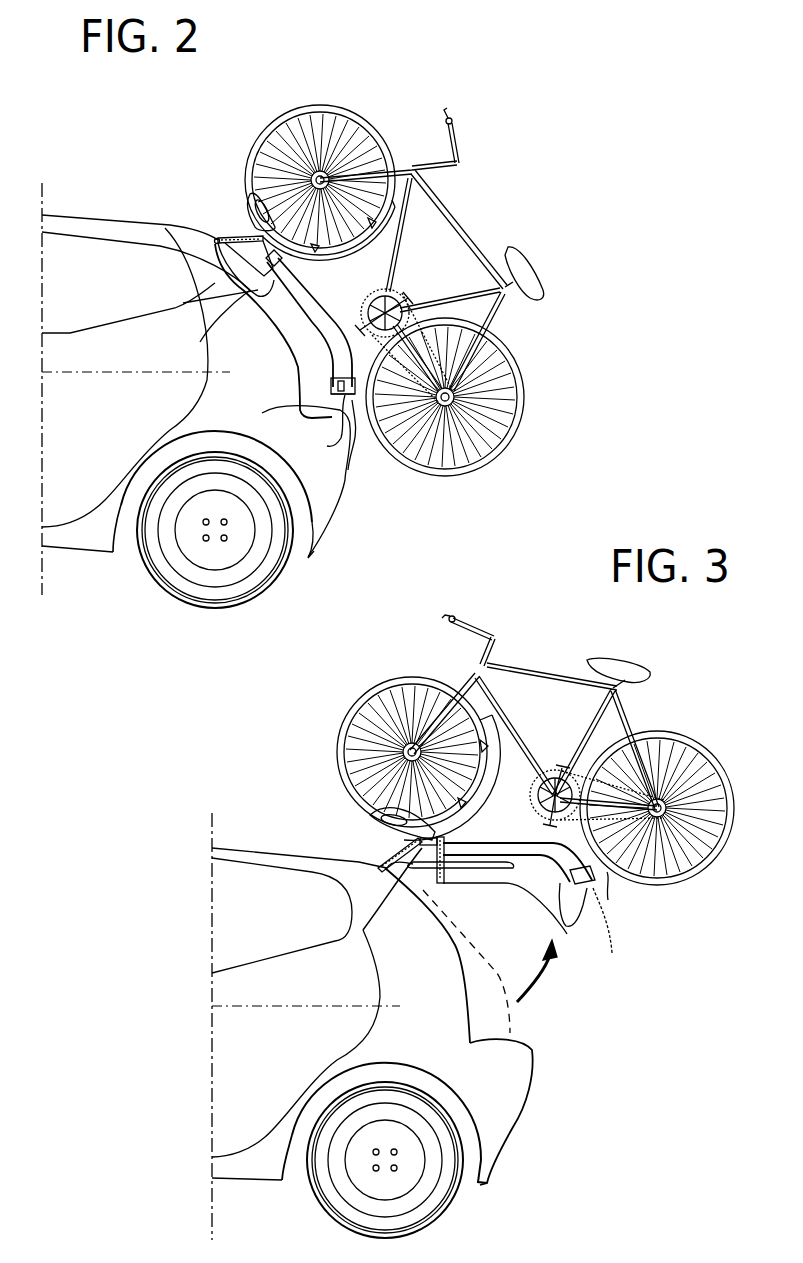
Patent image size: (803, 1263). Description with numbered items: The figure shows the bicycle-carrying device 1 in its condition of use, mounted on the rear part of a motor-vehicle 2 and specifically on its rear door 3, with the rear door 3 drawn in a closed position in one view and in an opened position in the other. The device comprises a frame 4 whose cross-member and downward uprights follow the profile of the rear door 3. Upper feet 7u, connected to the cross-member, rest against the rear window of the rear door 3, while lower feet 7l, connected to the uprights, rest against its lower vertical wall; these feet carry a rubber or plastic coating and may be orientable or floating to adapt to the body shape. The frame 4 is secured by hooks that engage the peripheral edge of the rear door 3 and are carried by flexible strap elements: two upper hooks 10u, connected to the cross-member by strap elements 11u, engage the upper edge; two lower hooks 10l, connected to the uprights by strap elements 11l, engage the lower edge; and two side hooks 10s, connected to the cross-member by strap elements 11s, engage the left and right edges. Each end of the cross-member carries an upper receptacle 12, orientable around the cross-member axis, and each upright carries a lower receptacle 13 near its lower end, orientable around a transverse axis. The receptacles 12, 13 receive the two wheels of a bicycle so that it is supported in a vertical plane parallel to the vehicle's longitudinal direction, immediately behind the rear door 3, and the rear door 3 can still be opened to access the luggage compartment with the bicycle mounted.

In FIG. 2, the bicycle-carrying device 1 is at (385, 283).
In FIG. 3, the bicycle-carrying device 1 is at (482, 806).
In FIG. 2, the motor-vehicle 2 is at (185, 222).
In FIG. 3, the motor-vehicle 2 is at (270, 838).
In FIG. 2, the rear door 3 is at (298, 360).
In FIG. 3, the rear door 3 is at (523, 890).
In FIG. 2, the frame 4 is at (372, 288).
In FIG. 3, the frame 4 is at (497, 840).
In FIG. 2, the upper feet 7u is at (170, 228).
In FIG. 3, the upper feet 7u is at (363, 930).
In FIG. 2, the lower feet 7l is at (331, 386).
In FIG. 3, the lower feet 7l is at (565, 928).
In FIG. 2, the side hooks 10s is at (183, 303).
In FIG. 3, the side hooks 10s is at (428, 890).
In FIG. 3, the upper hooks 10u is at (345, 937).
In FIG. 2, the lower hooks 10l is at (314, 429).
In FIG. 3, the lower hooks 10l is at (619, 941).
In FIG. 2, the strap elements 11s is at (250, 292).
In FIG. 3, the strap elements 11s is at (453, 858).
In FIG. 3, the strap elements 11u is at (335, 890).
In FIG. 2, the strap elements 11l is at (348, 470).
In FIG. 3, the strap elements 11l is at (608, 900).
In FIG. 2, the upper receptacle 12 is at (243, 200).
In FIG. 3, the upper receptacle 12 is at (386, 825).
In FIG. 2, the lower receptacle 13 is at (363, 397).
In FIG. 3, the lower receptacle 13 is at (608, 870).